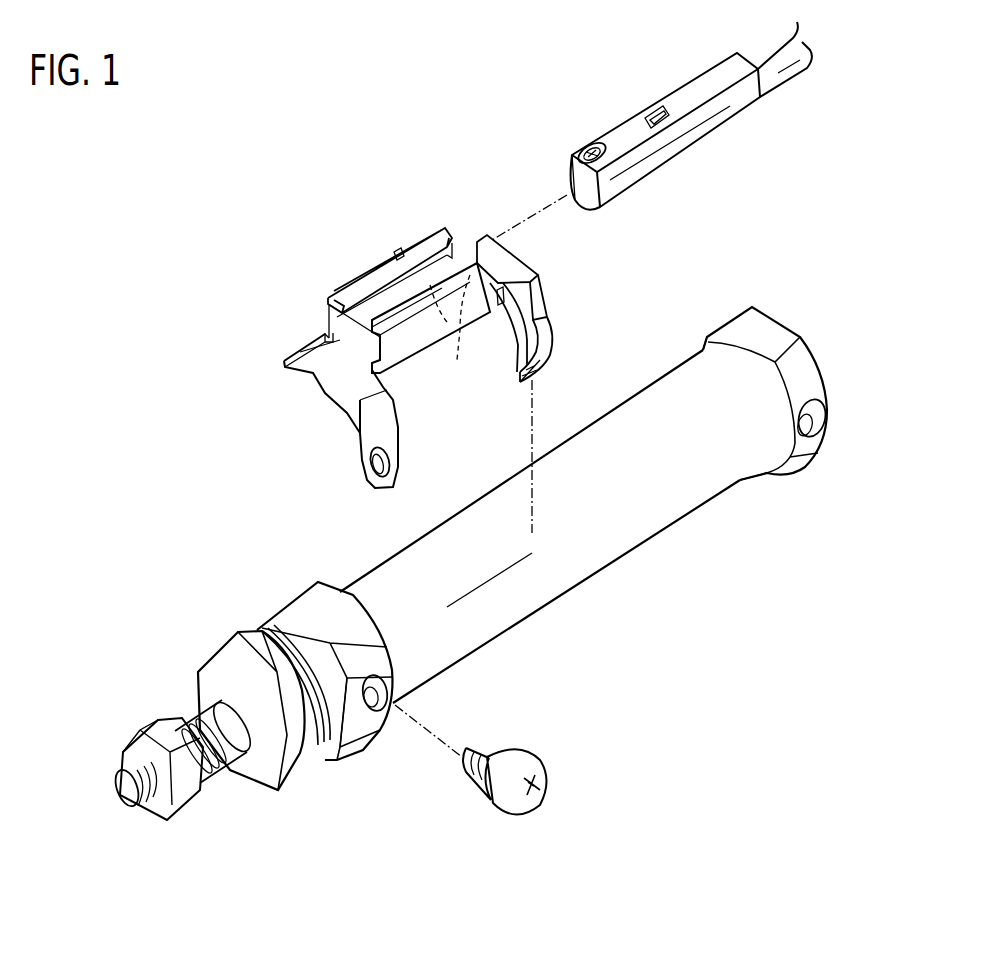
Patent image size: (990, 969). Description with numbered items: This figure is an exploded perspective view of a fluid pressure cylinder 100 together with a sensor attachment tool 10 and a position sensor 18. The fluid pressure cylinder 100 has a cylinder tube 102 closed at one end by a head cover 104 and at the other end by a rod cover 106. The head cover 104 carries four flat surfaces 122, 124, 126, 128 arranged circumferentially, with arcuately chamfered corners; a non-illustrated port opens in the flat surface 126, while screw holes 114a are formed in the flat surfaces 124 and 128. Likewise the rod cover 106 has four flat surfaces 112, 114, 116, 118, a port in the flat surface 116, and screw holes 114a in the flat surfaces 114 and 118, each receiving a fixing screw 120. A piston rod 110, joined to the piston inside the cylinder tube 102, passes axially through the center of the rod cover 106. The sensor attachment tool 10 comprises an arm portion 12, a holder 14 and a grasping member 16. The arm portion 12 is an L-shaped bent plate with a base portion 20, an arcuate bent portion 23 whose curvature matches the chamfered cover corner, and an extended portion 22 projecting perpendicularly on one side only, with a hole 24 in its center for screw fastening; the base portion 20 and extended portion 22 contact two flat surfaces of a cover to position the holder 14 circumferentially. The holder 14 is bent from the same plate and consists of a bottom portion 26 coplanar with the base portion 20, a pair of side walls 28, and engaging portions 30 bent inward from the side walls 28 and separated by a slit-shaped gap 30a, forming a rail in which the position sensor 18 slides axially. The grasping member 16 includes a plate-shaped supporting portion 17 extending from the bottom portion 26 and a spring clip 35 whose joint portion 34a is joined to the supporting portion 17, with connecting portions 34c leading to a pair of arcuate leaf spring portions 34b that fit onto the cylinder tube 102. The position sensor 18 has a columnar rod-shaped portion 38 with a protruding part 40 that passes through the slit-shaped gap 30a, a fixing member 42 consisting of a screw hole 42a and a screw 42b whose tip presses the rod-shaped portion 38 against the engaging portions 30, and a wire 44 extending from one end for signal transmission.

The sensor attachment tool 10 is at (264, 300).
The arm portion 12 is at (306, 357).
The holder 14 is at (354, 282).
The grasping member 16 is at (489, 236).
The supporting portion 17 is at (529, 345).
The position sensor 18 is at (673, 169).
The base portion 20 is at (317, 370).
The extended portion 22 is at (390, 423).
The bent portion 23 is at (360, 403).
The hole 24 is at (390, 458).
The bottom portion 26 is at (348, 343).
The side walls 28 is at (398, 255).
The engaging portions 30 is at (437, 292).
The slit-shaped gap 30a is at (385, 262).
The joint portion 34a is at (517, 272).
The leaf spring portions 34b is at (547, 344).
The connecting portions 34c is at (531, 293).
The clip 35 is at (560, 324).
The rod-shaped portion 38 is at (703, 131).
The protruding part 40 is at (722, 78).
The fixing member 42 is at (585, 144).
The screw hole 42a is at (596, 141).
The screw 42b is at (571, 169).
The wire 44 is at (792, 82).
The fluid pressure cylinder 100 is at (812, 232).
The cylinder tube 102 is at (660, 507).
The head cover 104 is at (829, 388).
The rod cover 106 is at (289, 591).
The piston rod 110 is at (167, 727).
The flat surface 112 is at (342, 606).
The flat surface 114 is at (363, 723).
The screw holes 114a is at (808, 428).
The flat surface 116 is at (318, 762).
The flat surface 118 is at (255, 628).
The fixing screw 120 is at (536, 748).
The flat surface 122 is at (760, 328).
The flat surface 124 is at (825, 423).
The flat surface 126 is at (767, 477).
The flat surface 128 is at (700, 346).